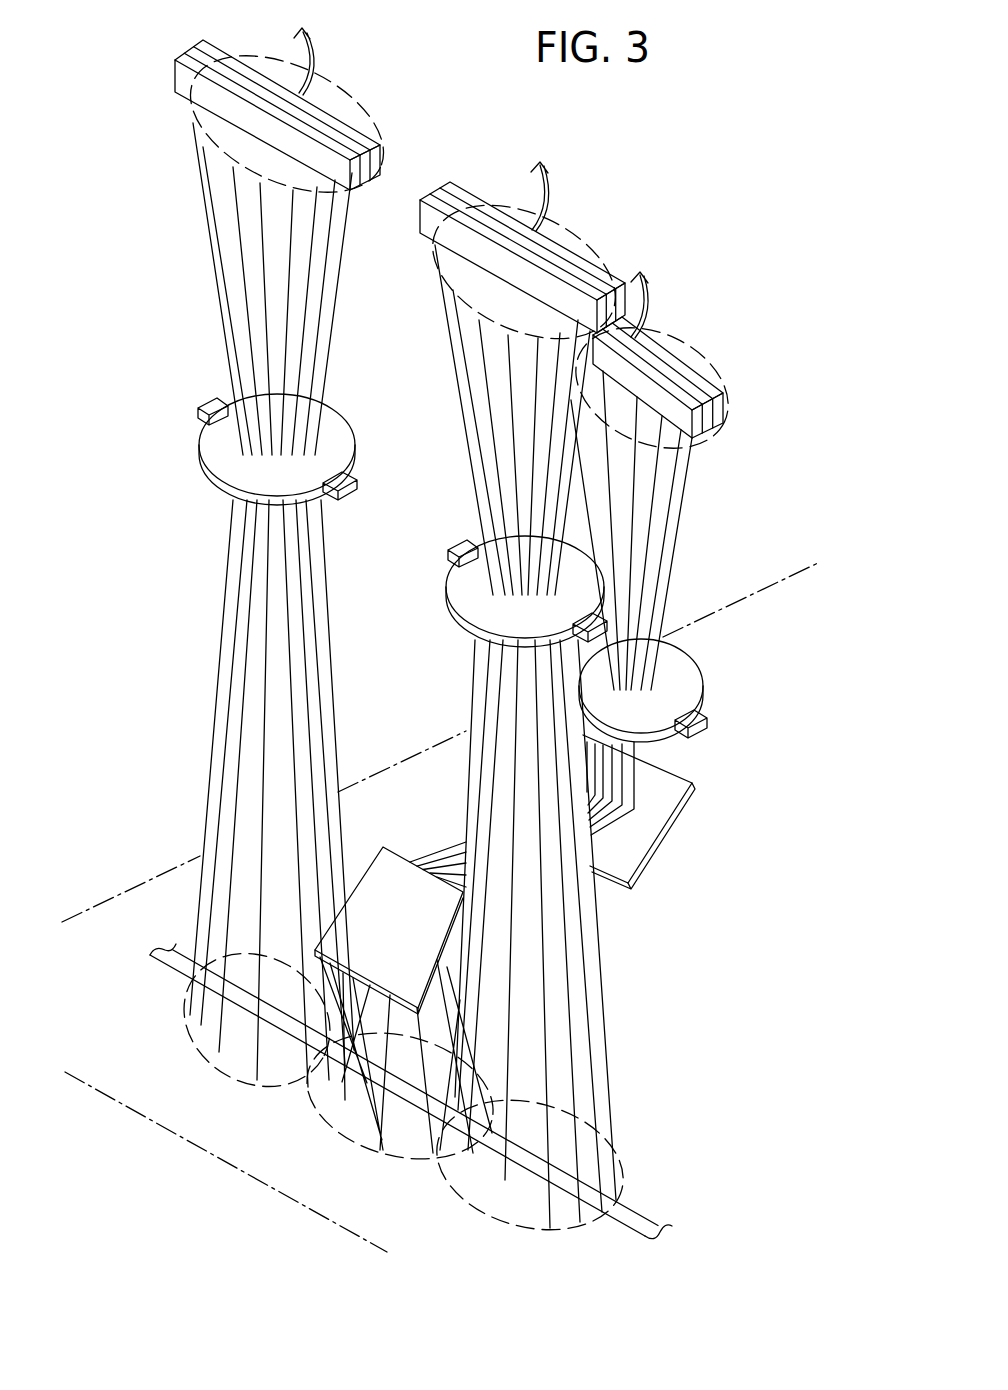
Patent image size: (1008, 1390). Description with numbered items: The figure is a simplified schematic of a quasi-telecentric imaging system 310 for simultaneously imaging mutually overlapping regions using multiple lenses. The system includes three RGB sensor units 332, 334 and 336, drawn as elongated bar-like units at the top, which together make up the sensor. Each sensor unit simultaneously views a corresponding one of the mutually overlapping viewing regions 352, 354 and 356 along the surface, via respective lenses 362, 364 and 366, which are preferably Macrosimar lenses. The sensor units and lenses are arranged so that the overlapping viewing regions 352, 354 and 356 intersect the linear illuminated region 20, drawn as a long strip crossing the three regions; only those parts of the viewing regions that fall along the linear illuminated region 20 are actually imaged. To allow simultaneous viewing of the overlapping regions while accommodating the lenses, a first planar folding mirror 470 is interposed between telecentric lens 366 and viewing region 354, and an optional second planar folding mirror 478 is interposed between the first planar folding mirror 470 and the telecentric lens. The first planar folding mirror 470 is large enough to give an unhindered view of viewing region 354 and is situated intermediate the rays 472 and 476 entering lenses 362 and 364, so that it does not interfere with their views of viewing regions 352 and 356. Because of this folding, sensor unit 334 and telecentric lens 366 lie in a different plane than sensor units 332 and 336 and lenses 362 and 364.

The quasi-telecentric imaging system 310 is at (134, 60).
The RGB sensor unit 332 is at (371, 138).
The RGB sensor unit 334 is at (468, 193).
The RGB sensor unit 336 is at (697, 380).
The lens 362 is at (222, 455).
The lens 364 is at (460, 592).
The telecentric lens 366 is at (688, 690).
The rays 472 is at (227, 695).
The rays 476 is at (601, 1003).
The first planar folding mirror 470 is at (388, 868).
The second planar folding mirror 478 is at (647, 818).
The viewing region 352 is at (232, 1058).
The viewing region 354 is at (370, 1135).
The viewing region 356 is at (487, 1212).
The linear illuminated region 20 is at (645, 1220).